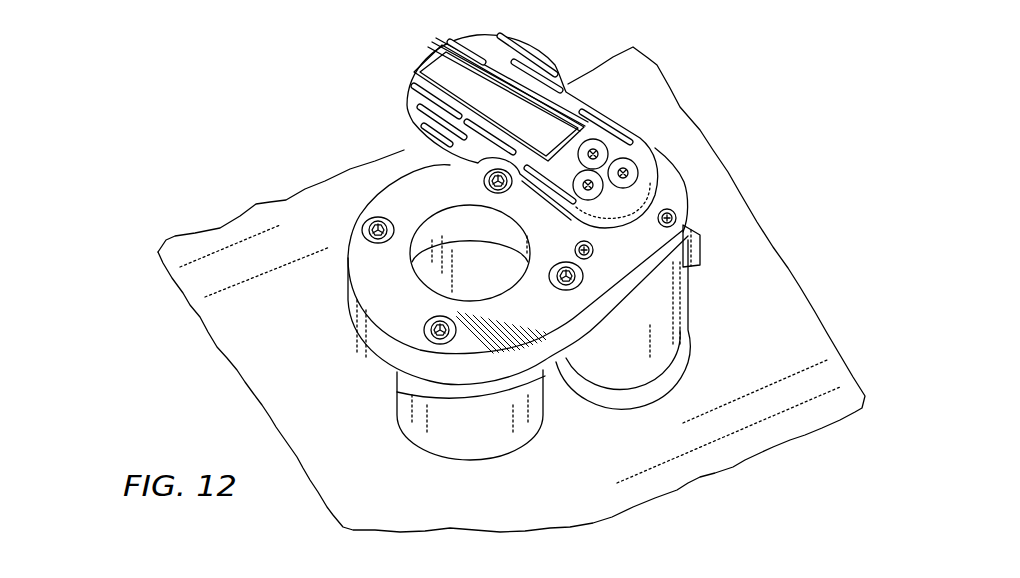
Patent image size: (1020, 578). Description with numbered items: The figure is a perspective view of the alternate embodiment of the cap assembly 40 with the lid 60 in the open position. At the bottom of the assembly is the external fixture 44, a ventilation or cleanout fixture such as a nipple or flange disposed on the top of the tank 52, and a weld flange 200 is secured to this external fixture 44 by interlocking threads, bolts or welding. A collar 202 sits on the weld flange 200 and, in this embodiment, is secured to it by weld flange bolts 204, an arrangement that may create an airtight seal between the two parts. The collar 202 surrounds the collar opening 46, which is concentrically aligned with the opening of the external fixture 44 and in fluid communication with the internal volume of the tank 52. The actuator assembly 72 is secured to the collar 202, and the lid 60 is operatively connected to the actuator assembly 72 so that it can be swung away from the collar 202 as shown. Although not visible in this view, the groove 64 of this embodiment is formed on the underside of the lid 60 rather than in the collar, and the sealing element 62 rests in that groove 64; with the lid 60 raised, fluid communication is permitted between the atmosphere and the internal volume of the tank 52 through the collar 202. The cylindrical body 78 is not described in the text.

The cap assembly 40 is at (701, 165).
The external fixture 44 is at (483, 443).
The collar opening 46 is at (470, 246).
The tank 52 is at (373, 466).
The lid 60 is at (437, 56).
The sealing element 62 is at (405, 110).
The groove 64 is at (493, 143).
The actuator assembly 72 is at (619, 414).
The cylinder wall 78 is at (632, 357).
The weld flange 200 is at (388, 360).
The collar 202 is at (370, 323).
The weld flange bolts 204 is at (362, 226).